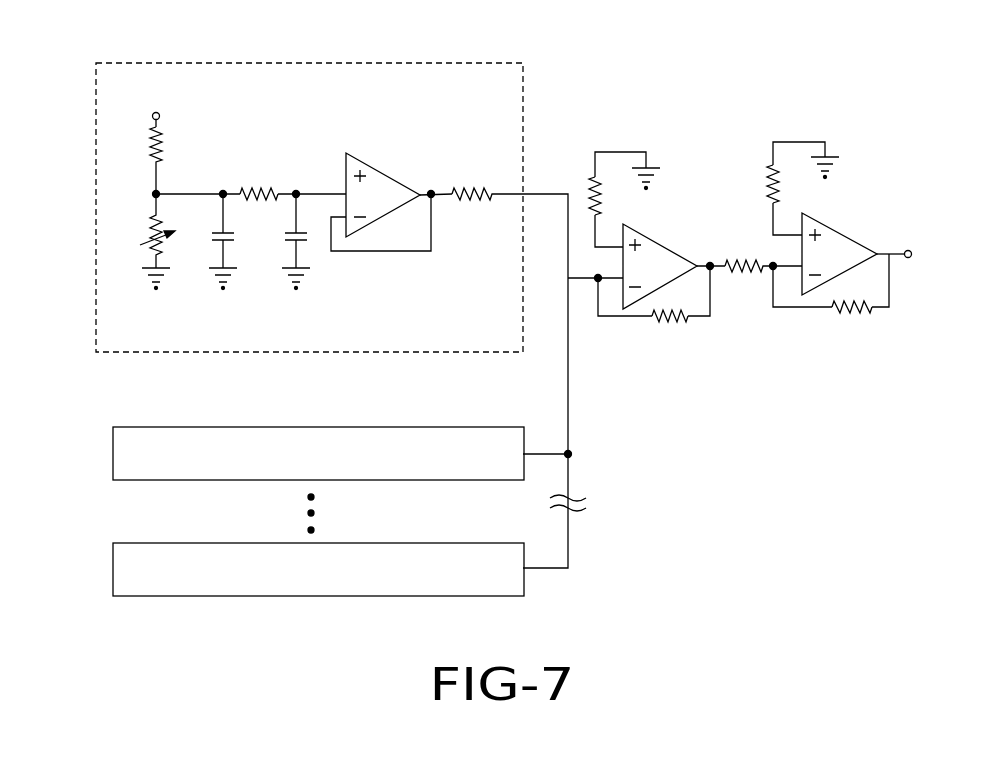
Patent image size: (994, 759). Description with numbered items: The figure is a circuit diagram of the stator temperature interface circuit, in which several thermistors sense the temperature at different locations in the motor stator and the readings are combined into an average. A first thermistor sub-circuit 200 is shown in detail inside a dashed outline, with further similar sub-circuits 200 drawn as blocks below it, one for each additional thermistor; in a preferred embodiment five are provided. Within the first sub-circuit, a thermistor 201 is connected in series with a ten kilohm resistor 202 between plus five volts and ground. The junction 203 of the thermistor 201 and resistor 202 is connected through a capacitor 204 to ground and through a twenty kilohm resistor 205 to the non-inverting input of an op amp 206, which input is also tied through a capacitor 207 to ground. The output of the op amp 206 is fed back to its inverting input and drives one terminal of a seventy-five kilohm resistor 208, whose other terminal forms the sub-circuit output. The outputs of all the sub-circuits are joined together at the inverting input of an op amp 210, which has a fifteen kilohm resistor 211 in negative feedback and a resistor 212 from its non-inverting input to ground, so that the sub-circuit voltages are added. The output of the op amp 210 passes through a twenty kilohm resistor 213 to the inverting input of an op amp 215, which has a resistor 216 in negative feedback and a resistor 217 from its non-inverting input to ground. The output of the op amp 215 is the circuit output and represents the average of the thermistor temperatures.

The thermistor sub-circuit 200 is at (183, 632).
The thermistor 201 is at (172, 236).
The resistor 202 is at (163, 130).
The junction 203 is at (160, 192).
The capacitor 204 is at (236, 240).
The resistor 205 is at (258, 188).
The op amp 206 is at (382, 172).
The capacitor 207 is at (305, 240).
The resistor 208 is at (470, 188).
The op amp 210 is at (655, 243).
The resistor 211 is at (683, 326).
The resistor 212 is at (592, 185).
The resistor 213 is at (740, 274).
The op amp 215 is at (845, 238).
The resistor 216 is at (851, 316).
The resistor 217 is at (768, 185).